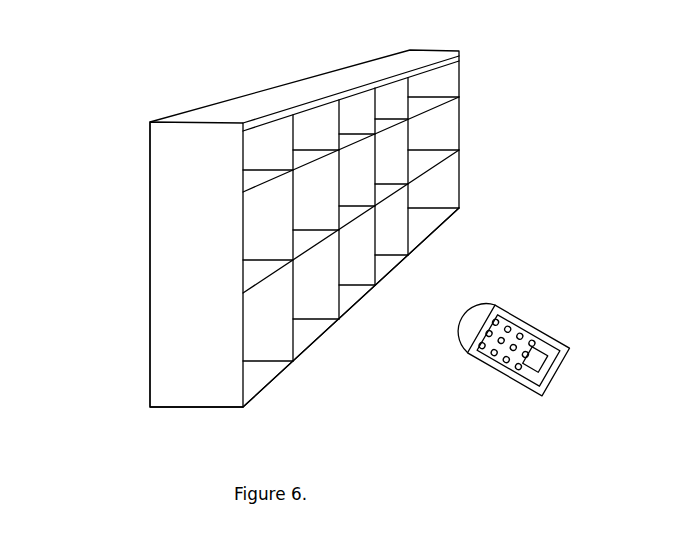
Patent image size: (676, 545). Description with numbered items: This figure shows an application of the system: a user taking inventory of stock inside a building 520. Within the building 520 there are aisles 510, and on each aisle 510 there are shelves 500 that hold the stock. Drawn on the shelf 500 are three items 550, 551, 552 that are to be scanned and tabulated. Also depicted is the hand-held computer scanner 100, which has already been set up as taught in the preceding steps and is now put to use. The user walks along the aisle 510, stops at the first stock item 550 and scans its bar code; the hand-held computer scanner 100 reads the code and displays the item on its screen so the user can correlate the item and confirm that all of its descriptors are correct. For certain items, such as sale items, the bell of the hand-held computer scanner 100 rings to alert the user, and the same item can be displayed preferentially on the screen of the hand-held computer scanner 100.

The building 520 is at (252, 210).
The shelf 500 is at (351, 208).
The aisle 510 is at (196, 264).
The item 550 is at (351, 153).
The item 551 is at (350, 229).
The item 552 is at (351, 311).
The hand-held computer scanner 100 is at (374, 283).